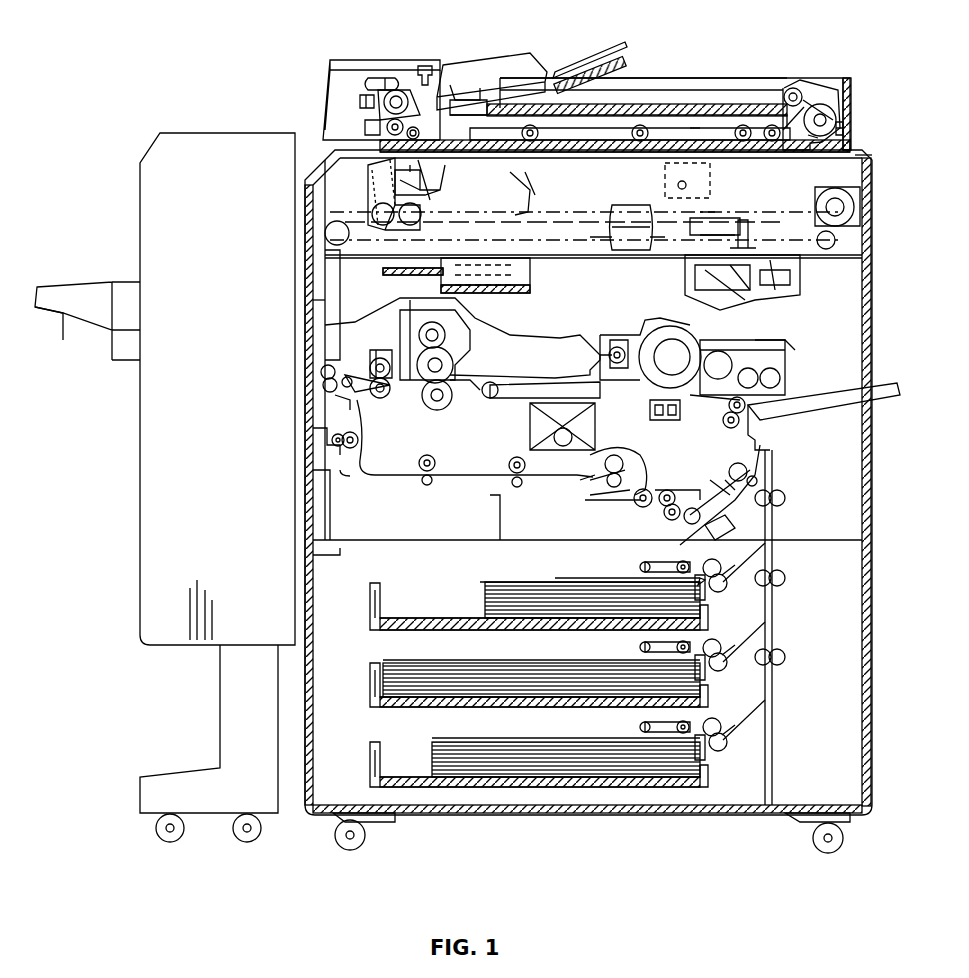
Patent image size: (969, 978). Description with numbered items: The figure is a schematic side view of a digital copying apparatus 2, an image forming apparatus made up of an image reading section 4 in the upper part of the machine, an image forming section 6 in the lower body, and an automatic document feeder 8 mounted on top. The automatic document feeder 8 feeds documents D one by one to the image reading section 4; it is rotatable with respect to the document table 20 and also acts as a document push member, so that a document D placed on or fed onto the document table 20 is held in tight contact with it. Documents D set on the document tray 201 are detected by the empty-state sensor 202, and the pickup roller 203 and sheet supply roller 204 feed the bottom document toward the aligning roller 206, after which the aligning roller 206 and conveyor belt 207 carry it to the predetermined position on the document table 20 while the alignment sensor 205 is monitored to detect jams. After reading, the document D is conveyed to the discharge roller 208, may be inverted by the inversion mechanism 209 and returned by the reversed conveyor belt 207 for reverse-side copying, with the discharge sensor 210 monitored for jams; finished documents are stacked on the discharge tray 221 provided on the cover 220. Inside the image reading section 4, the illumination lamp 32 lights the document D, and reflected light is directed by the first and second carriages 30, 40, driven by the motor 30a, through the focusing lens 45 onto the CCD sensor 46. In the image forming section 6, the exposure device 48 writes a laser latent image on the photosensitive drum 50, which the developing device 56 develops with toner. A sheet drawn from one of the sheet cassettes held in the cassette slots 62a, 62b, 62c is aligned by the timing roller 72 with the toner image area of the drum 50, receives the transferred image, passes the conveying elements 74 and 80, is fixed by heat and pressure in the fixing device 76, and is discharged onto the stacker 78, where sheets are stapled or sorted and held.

The digital copying apparatus 2 is at (846, 76).
The image reading section 4 is at (340, 258).
The image forming section 6 is at (848, 268).
The automatic document feeder (ADF) 8 is at (486, 56).
The document table 20 is at (800, 160).
The first carriage 30 is at (468, 183).
The motor 30a is at (875, 158).
The illumination lamp 32 is at (414, 261).
The second carriage 40 is at (345, 182).
The focusing lens 45 is at (630, 204).
The CCD sensor 46 is at (740, 215).
The exposure device 48 is at (752, 300).
The photosensitive drum 50 is at (688, 340).
The developing device 56 is at (790, 352).
The cassette slot 62a is at (372, 590).
The cassette slot 62b is at (365, 672).
The cassette slot 62c is at (365, 752).
The timing roller 72 is at (722, 422).
The fixing unit 74 is at (522, 392).
The fixing device 76 is at (482, 294).
The stacker 78 is at (192, 137).
The conveying path 80 is at (630, 462).
The document tray 201 is at (540, 68).
The empty-state sensor 202 is at (422, 62).
The pickup roller 203 is at (427, 118).
The sheet supply roller 204 is at (368, 62).
The alignment sensor 205 is at (365, 122).
The aligning roller 206 is at (360, 96).
The conveyor belt 207 is at (550, 108).
The discharge roller 208 is at (843, 100).
The inversion mechanism 209 is at (786, 84).
The discharge sensor 210 is at (810, 75).
The cover 220 is at (680, 78).
The discharge tray 221 is at (612, 112).
The document D is at (685, 126).